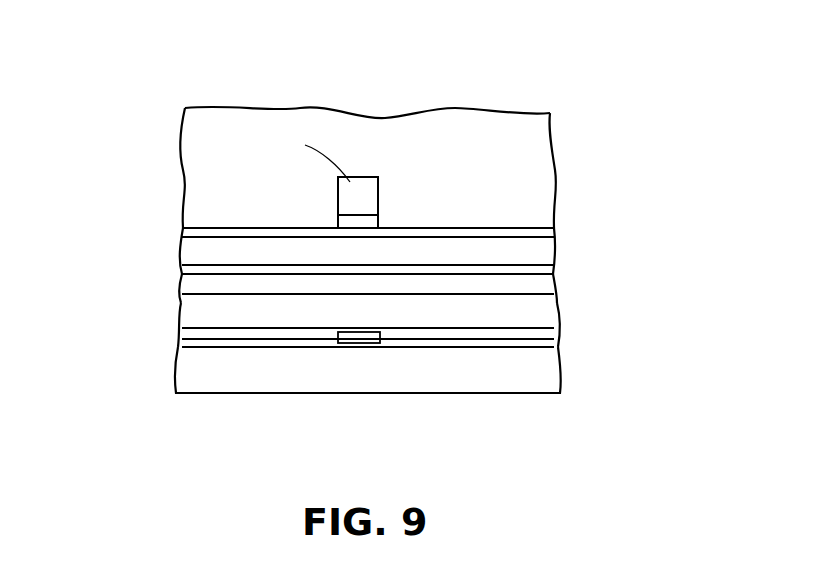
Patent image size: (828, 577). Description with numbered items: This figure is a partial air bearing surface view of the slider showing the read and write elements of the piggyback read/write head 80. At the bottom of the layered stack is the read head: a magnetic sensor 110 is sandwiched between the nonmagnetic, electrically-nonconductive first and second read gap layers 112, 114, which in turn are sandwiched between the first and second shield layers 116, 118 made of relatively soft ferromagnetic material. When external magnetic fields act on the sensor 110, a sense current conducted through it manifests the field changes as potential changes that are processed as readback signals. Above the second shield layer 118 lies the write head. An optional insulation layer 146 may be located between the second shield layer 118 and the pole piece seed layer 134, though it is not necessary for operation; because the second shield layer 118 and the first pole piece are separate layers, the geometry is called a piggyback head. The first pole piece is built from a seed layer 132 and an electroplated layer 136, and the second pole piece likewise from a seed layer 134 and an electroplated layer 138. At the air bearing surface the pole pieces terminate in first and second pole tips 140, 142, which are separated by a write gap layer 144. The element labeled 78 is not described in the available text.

The read/write head 80 is at (575, 128).
The substrate / upper structure 78 is at (190, 142).
The electroplated layer 136 is at (365, 183).
The write gap layer 144 is at (220, 228).
The second pole tip 142 is at (384, 177).
The seed layer 132 is at (358, 217).
The electroplated layer 138 is at (182, 243).
The first pole tip 140 is at (562, 237).
The seed layer 134 is at (182, 267).
The insulation layer 146 is at (548, 287).
The second shield layer 118 is at (182, 303).
The first shield layer 116 is at (545, 375).
The first read gap layer 112 is at (250, 347).
The magnetic sensor 110 is at (357, 343).
The second read gap layer 114 is at (507, 347).